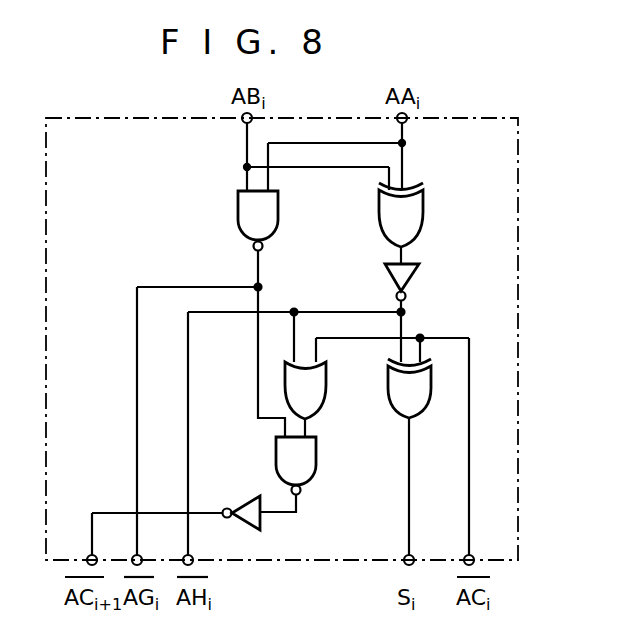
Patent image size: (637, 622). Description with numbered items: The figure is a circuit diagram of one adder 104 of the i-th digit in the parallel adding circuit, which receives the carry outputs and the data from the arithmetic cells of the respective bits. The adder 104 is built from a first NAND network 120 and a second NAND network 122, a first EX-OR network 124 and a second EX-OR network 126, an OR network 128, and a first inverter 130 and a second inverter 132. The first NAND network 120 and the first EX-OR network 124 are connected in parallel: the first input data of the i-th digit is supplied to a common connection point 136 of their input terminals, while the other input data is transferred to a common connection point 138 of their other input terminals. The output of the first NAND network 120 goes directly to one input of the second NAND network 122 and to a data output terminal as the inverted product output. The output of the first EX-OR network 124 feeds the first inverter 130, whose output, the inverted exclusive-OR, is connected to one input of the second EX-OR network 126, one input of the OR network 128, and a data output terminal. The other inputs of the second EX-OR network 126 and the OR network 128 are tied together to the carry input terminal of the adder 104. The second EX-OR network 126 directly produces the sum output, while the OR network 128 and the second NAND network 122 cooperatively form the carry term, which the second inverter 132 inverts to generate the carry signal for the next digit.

The adder 104 is at (520, 268).
The first NAND network 120 is at (246, 214).
The second NAND network 122 is at (308, 457).
The first EX-OR network 124 is at (410, 212).
The second EX-OR network 126 is at (420, 398).
The OR network 128 is at (318, 388).
The first inverter 130 is at (408, 272).
The second inverter 132 is at (250, 497).
The common connection point 136 is at (406, 143).
The common connection point 138 is at (244, 164).